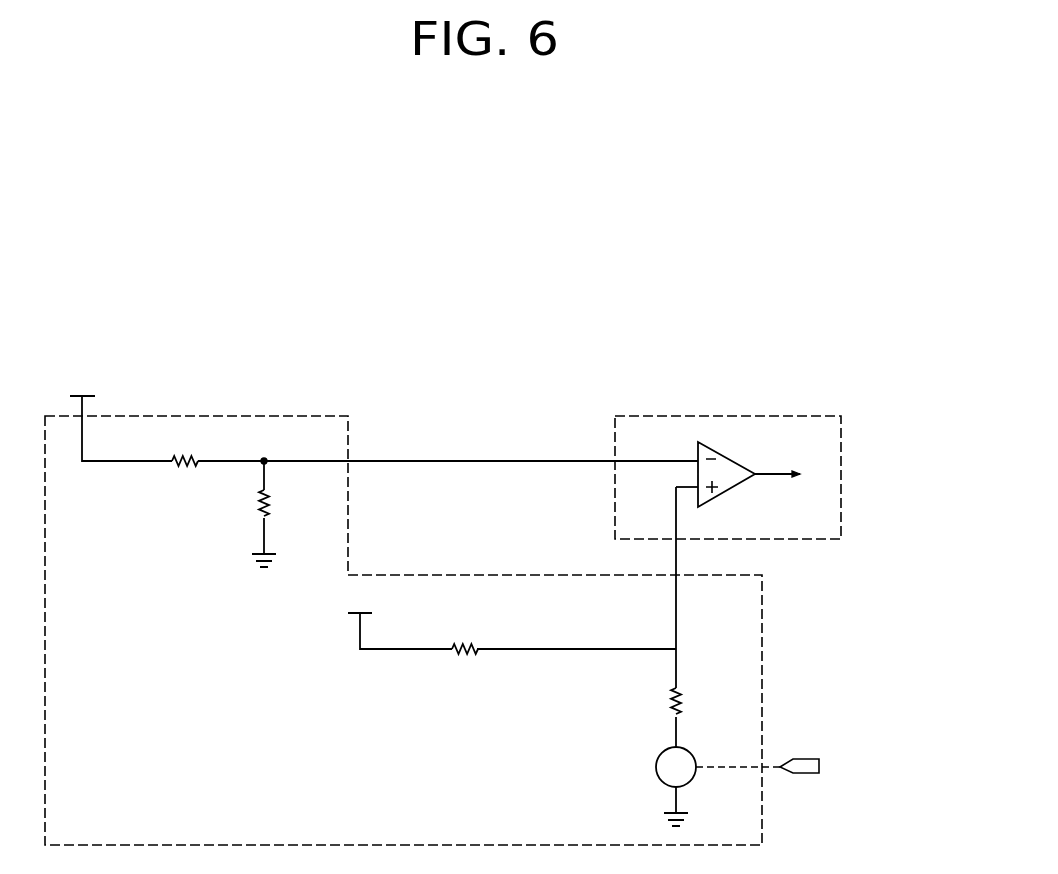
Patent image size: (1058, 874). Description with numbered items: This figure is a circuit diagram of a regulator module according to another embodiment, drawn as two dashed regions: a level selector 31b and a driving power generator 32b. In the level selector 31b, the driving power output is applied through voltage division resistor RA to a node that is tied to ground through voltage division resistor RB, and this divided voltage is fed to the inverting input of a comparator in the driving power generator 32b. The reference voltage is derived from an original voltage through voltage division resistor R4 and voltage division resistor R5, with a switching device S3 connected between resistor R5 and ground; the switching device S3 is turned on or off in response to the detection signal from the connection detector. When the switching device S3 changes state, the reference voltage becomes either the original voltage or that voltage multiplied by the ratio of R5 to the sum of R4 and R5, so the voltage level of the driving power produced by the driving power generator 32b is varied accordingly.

The level selector 31b is at (262, 414).
The driving power generator 32b is at (726, 414).
The voltage division resistor RA is at (185, 447).
The voltage division resistor RB is at (282, 503).
The voltage division resistor R4 is at (465, 665).
The voltage division resistor R5 is at (692, 701).
The switching device S3 is at (676, 767).